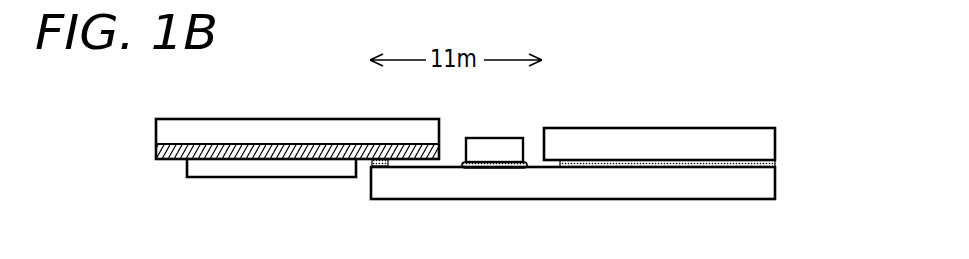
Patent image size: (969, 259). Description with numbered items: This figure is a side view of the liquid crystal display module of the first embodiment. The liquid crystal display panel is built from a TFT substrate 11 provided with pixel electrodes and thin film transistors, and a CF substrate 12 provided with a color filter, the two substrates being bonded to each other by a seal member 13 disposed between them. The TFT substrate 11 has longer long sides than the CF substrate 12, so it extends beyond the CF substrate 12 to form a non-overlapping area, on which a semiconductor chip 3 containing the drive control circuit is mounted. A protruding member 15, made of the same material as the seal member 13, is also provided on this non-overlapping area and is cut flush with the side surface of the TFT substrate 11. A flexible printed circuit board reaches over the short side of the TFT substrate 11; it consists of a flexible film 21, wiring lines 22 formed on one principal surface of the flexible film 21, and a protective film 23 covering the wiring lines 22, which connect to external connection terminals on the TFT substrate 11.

The semiconductor chip 3 is at (494, 140).
The TFT substrate 11 is at (713, 180).
The CF substrate 12 is at (737, 134).
The seal member 13 is at (625, 165).
The protruding member 15 is at (373, 160).
The flexible film 21 is at (276, 130).
The wiring lines 22 is at (318, 150).
The protective film 23 is at (280, 171).